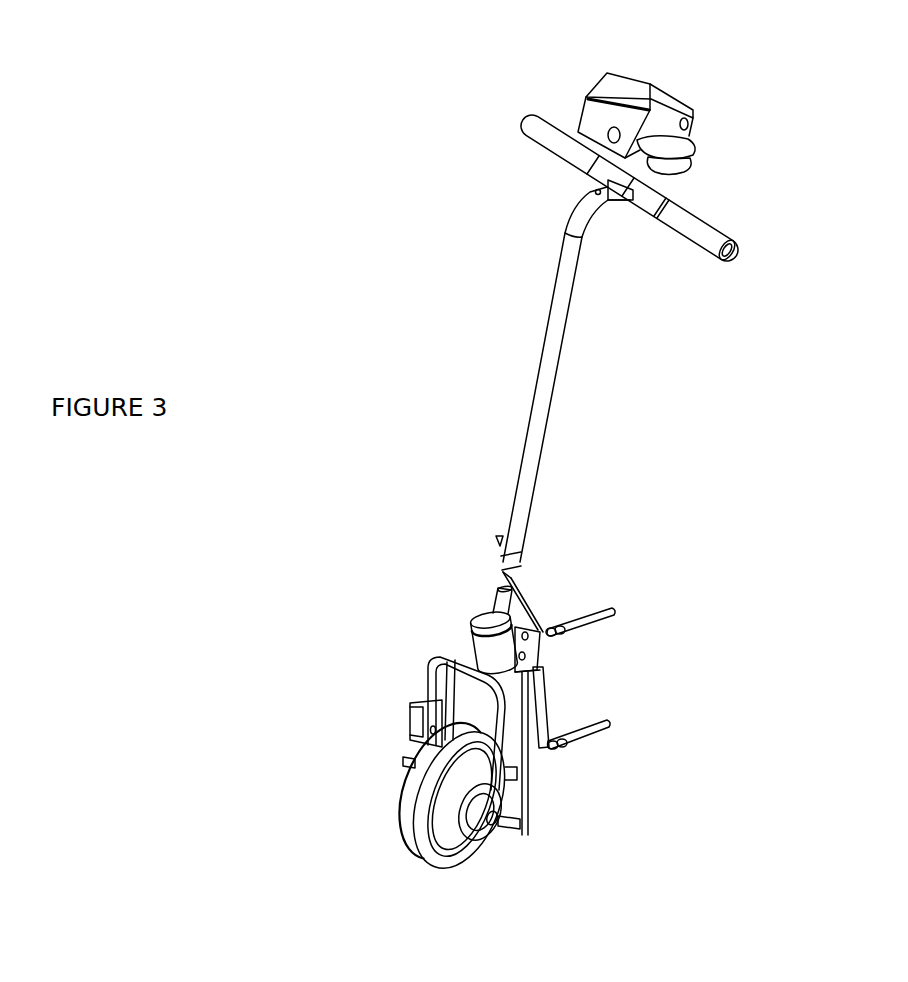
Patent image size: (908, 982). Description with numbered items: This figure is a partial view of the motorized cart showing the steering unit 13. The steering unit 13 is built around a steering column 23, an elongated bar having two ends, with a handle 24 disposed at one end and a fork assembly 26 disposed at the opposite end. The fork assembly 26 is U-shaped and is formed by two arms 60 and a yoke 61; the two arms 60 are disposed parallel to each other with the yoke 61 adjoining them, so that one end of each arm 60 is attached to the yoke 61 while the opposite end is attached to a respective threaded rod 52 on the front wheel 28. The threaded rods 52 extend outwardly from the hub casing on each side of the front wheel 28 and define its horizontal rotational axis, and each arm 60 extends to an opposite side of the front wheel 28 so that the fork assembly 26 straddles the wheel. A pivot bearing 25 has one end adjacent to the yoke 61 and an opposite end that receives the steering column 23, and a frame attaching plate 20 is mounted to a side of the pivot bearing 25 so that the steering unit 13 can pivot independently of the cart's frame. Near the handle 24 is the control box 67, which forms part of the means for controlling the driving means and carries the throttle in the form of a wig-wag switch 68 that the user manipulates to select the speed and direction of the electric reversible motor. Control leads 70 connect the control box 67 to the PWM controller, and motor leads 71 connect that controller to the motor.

The steering unit 13 is at (403, 367).
The frame attaching plate 20 is at (537, 648).
The steering column 23 is at (550, 412).
The handle 24 is at (690, 212).
The pivot bearing 25 is at (477, 640).
The fork assembly 26 is at (470, 673).
The front wheel 28 is at (400, 823).
The threaded rods 52 is at (403, 762).
The arms 60 is at (438, 712).
The yoke 61 is at (500, 677).
The control box 67 is at (693, 122).
The wig-wag switch 68 is at (663, 92).
The control leads 70 is at (594, 613).
The motor leads 71 is at (603, 730).